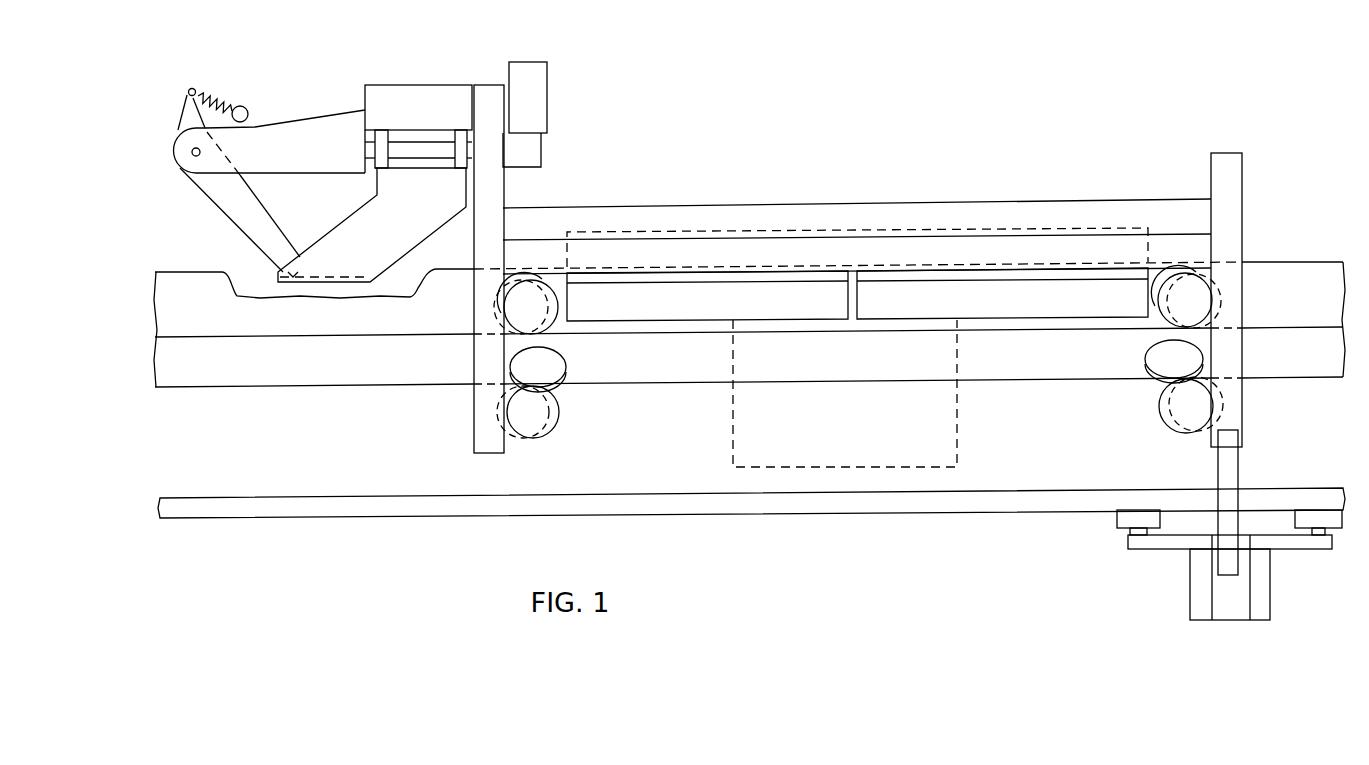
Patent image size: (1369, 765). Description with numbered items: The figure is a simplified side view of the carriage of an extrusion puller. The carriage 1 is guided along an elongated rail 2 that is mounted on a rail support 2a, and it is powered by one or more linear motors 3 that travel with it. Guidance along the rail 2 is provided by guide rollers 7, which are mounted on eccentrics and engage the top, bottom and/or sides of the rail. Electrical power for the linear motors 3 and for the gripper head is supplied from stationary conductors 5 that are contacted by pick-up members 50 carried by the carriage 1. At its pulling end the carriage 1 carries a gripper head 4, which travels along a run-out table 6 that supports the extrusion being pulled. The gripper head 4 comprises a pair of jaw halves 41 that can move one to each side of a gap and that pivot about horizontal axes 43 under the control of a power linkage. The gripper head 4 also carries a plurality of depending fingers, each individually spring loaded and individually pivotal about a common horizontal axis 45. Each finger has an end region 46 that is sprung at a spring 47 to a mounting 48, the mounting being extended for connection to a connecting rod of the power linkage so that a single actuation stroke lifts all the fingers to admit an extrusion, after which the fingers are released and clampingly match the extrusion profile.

The carriage 1 is at (695, 203).
The rail 2 is at (170, 272).
The rail support 2a is at (1243, 412).
The linear motor 3 is at (697, 311).
The gripper head 4 is at (307, 113).
The stationary conductors 5 is at (998, 492).
The run-out table 6 is at (219, 268).
The guide rollers 7 is at (523, 320).
The jaw halves 41 is at (353, 253).
The horizontal axes 43 is at (417, 155).
The common horizontal axis 45 is at (192, 157).
The end region 46 is at (186, 95).
The spring 47 is at (214, 100).
The mounting 48 is at (246, 106).
The pick-up members 50 is at (1200, 557).